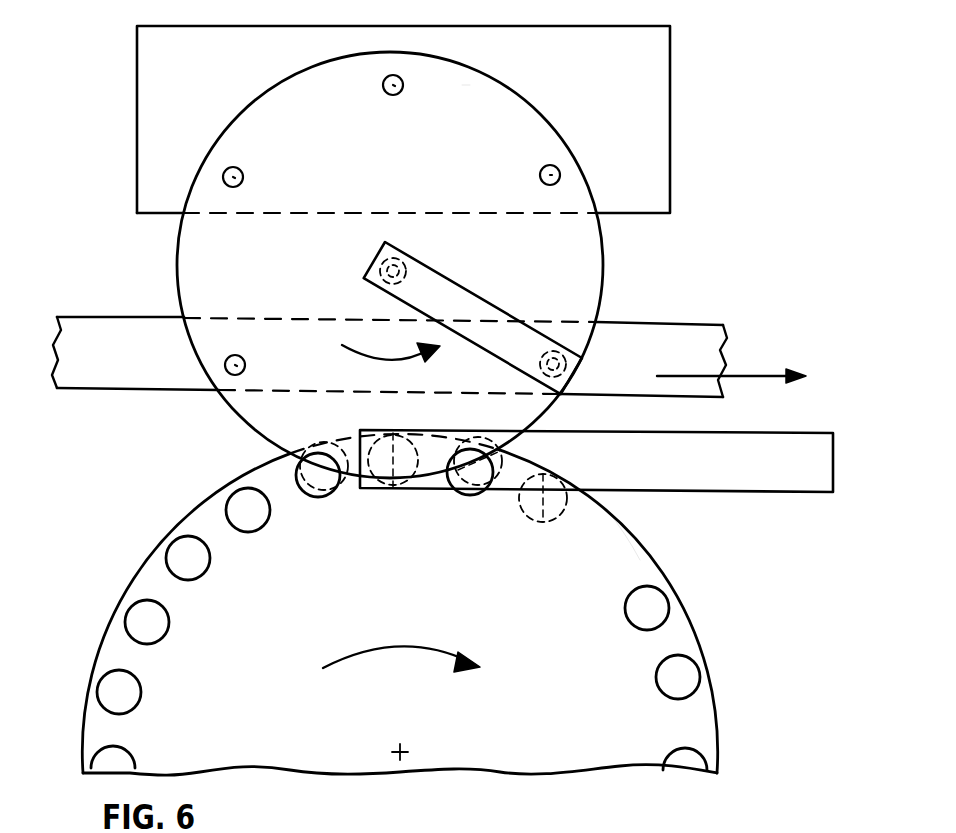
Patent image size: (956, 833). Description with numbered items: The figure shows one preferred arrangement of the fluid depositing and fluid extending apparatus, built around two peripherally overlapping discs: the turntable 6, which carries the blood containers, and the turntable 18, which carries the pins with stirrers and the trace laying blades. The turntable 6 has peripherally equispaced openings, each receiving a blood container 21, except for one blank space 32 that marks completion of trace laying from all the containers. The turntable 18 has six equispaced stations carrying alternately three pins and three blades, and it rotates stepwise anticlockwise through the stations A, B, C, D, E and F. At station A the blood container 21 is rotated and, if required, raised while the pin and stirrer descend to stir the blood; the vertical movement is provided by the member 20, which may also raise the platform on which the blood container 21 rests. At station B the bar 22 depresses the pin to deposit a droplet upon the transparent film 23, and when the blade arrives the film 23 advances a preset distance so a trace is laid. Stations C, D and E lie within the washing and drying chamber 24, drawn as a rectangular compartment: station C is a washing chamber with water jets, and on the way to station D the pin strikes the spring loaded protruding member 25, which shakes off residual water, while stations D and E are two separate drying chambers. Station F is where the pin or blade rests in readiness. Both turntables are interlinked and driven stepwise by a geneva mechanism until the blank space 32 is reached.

The washing and drying chamber 24 is at (162, 103).
The pins and trace laying blades turntable 18 is at (176, 255).
The bar 22 is at (482, 312).
The transparent film 23 is at (662, 340).
The member 20 is at (730, 448).
The turntable 6 is at (100, 658).
The blood container 21 is at (228, 505).
The blank space 32 is at (605, 545).
The spring loaded protruding member 25 is at (467, 70).
The station A is at (393, 432).
The station B is at (554, 351).
The station C is at (540, 174).
The station D is at (393, 95).
The station E is at (243, 175).
The station F is at (243, 358).